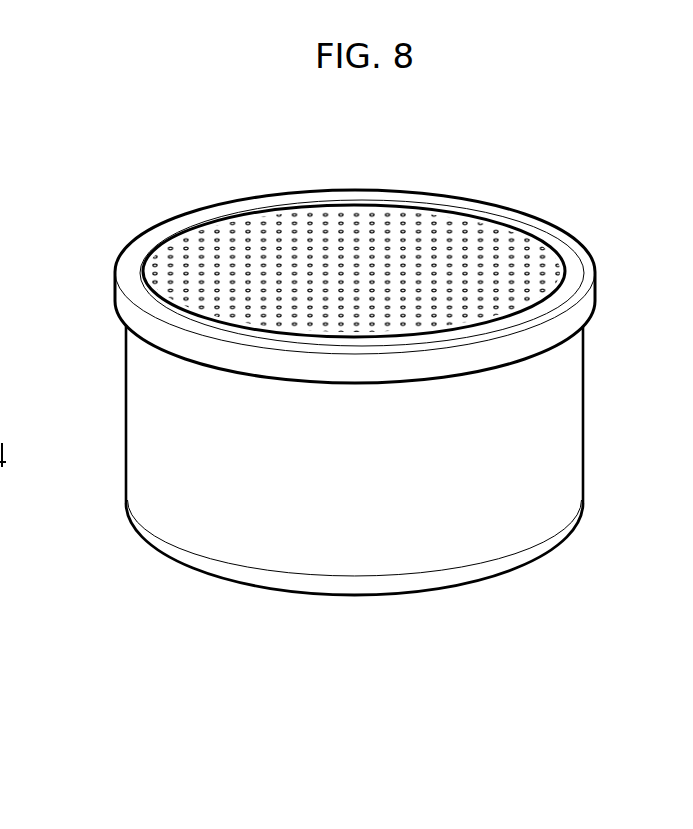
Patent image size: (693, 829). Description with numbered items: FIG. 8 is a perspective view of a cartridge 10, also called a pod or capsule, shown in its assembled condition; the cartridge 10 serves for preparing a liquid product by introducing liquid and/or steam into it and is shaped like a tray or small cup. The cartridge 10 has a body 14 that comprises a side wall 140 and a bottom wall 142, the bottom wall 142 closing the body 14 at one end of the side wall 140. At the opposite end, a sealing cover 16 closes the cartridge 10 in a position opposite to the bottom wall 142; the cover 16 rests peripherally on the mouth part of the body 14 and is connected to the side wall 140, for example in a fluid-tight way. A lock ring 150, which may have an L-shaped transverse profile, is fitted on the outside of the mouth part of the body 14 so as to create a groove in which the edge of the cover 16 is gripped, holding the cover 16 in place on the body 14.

The cartridge 10 is at (553, 134).
The body 14 is at (598, 484).
The side wall 140 is at (563, 407).
The bottom wall 142 is at (433, 624).
The lock ring 150 is at (575, 257).
The sealing cover 16 is at (266, 264).